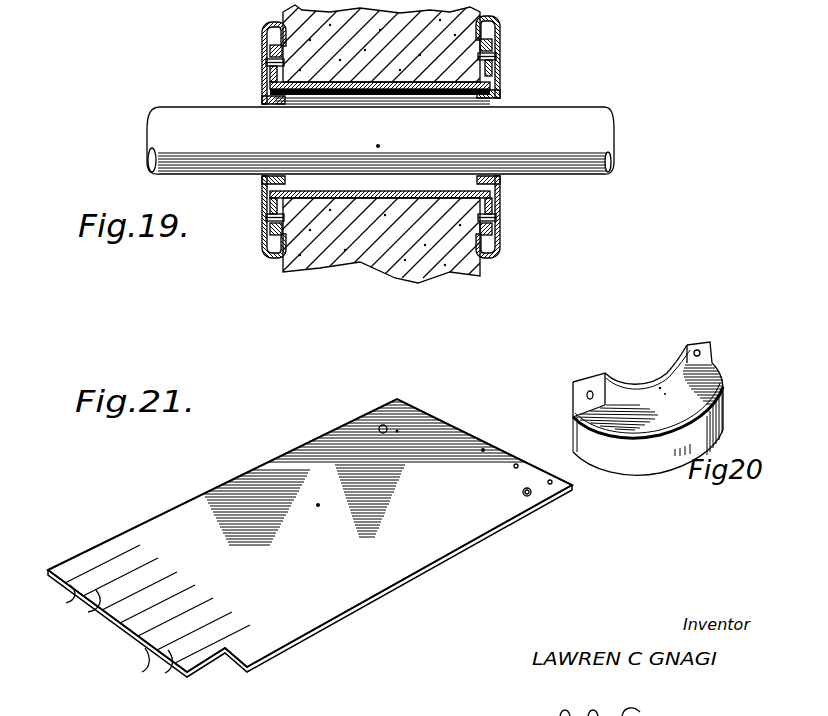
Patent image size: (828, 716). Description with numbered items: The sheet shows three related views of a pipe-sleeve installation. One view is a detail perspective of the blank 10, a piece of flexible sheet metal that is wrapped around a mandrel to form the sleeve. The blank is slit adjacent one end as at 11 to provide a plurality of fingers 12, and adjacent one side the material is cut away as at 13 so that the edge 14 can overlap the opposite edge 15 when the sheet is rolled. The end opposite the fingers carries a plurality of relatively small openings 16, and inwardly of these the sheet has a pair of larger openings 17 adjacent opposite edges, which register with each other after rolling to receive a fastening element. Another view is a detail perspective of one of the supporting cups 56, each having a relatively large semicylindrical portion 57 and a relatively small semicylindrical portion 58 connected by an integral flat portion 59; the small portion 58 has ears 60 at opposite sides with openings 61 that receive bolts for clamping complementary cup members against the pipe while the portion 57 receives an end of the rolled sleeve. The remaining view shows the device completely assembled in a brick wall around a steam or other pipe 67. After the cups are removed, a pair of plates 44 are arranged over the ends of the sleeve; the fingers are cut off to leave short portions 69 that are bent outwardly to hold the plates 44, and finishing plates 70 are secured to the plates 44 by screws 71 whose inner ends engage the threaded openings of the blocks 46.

In FIG. 21, the blank 10 is at (240, 486).
In FIG. 21, the slit 11 is at (78, 592).
In FIG. 21, the fingers 12 is at (178, 652).
In FIG. 21, the cut-away portion 13 is at (224, 662).
In FIG. 21, the edge 14 is at (302, 658).
In FIG. 21, the opposite edge 15 is at (146, 518).
In FIG. 21, the small openings 16 is at (447, 428).
In FIG. 21, the larger openings 17 is at (380, 426).
In FIG. 19, the plate 44 is at (264, 46).
In FIG. 19, the blocks 46 is at (500, 40).
In FIG. 20, the cups 56 is at (727, 387).
In FIG. 20, the semicylindrical portion 57 is at (726, 415).
In FIG. 20, the small cylindrical portion 58 is at (640, 384).
In FIG. 20, the flat portion 59 is at (656, 428).
In FIG. 20, the ears 60 is at (597, 378).
In FIG. 20, the openings 61 is at (586, 395).
In FIG. 19, the pipe 67 is at (380, 140).
In FIG. 19, the short portions 69 is at (262, 82).
In FIG. 19, the finishing plates 70 is at (268, 254).
In FIG. 19, the screws 71 is at (500, 54).